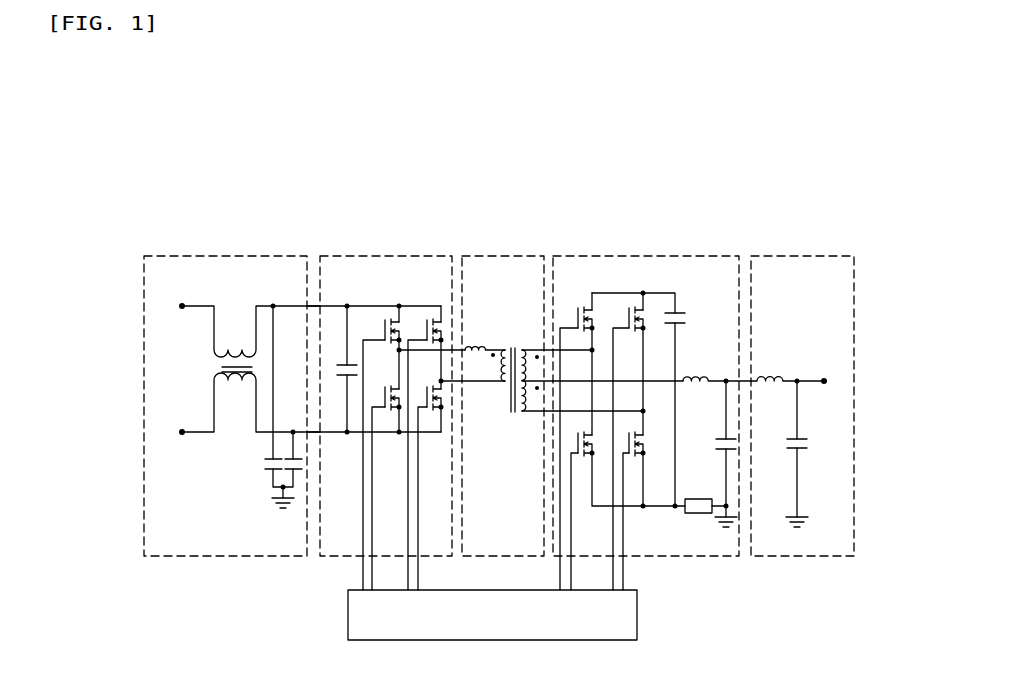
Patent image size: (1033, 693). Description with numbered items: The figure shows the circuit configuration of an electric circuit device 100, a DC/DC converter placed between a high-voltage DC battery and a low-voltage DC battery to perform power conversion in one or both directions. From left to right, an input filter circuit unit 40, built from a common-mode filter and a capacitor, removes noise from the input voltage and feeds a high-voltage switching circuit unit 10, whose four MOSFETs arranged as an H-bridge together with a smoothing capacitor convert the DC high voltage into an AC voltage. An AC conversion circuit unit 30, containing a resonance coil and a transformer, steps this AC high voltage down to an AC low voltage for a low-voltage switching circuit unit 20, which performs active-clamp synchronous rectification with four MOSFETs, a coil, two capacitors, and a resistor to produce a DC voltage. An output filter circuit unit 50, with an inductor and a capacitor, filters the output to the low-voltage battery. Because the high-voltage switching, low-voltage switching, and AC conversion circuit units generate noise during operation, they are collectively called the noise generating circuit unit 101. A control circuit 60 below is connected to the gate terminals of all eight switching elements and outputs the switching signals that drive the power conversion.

The electric circuit device 100 is at (206, 131).
The noise generating circuit unit 101 is at (683, 113).
The high-voltage switching circuit unit 10 is at (383, 256).
The low-voltage switching circuit unit 20 is at (616, 256).
The AC conversion circuit unit 30 is at (503, 256).
The input filter circuit unit 40 is at (228, 256).
The output filter circuit unit 50 is at (793, 256).
The control circuit 60 is at (637, 612).